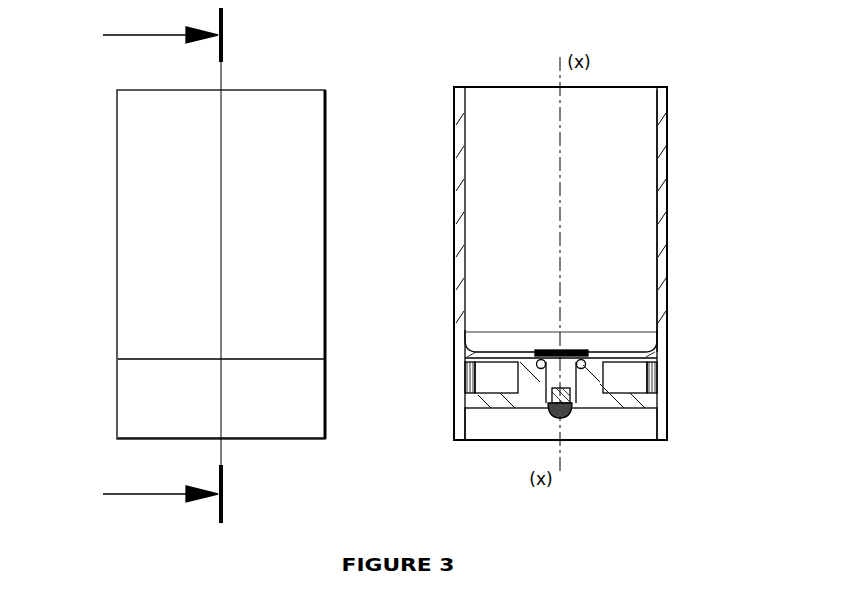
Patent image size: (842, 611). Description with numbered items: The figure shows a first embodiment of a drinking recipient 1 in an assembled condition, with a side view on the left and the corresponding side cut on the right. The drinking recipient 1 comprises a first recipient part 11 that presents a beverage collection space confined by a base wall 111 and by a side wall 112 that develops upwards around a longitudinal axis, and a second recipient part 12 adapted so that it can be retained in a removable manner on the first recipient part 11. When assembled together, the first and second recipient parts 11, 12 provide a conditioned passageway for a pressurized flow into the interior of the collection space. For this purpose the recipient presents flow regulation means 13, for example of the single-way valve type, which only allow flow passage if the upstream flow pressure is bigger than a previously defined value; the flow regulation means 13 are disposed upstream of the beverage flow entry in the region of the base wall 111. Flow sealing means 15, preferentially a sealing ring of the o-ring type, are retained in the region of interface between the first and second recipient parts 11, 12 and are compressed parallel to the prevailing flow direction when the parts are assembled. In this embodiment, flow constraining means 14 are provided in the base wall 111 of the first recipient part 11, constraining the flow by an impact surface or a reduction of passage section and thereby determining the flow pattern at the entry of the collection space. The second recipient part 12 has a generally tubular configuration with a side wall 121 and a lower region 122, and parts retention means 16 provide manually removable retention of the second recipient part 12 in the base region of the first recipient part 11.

The drinking recipient 1 is at (377, 264).
The first recipient part 11 is at (221, 278).
The second recipient part 12 is at (221, 414).
The flow regulation means 13 is at (566, 425).
The flow constraining means 14 is at (551, 340).
The flow sealing means 15 is at (583, 345).
The parts retention means 16 is at (668, 371).
The base wall 111 is at (612, 338).
The side wall 112 is at (692, 221).
The side wall of second recipient part 121 is at (519, 391).
The bottom plate 122 is at (561, 423).